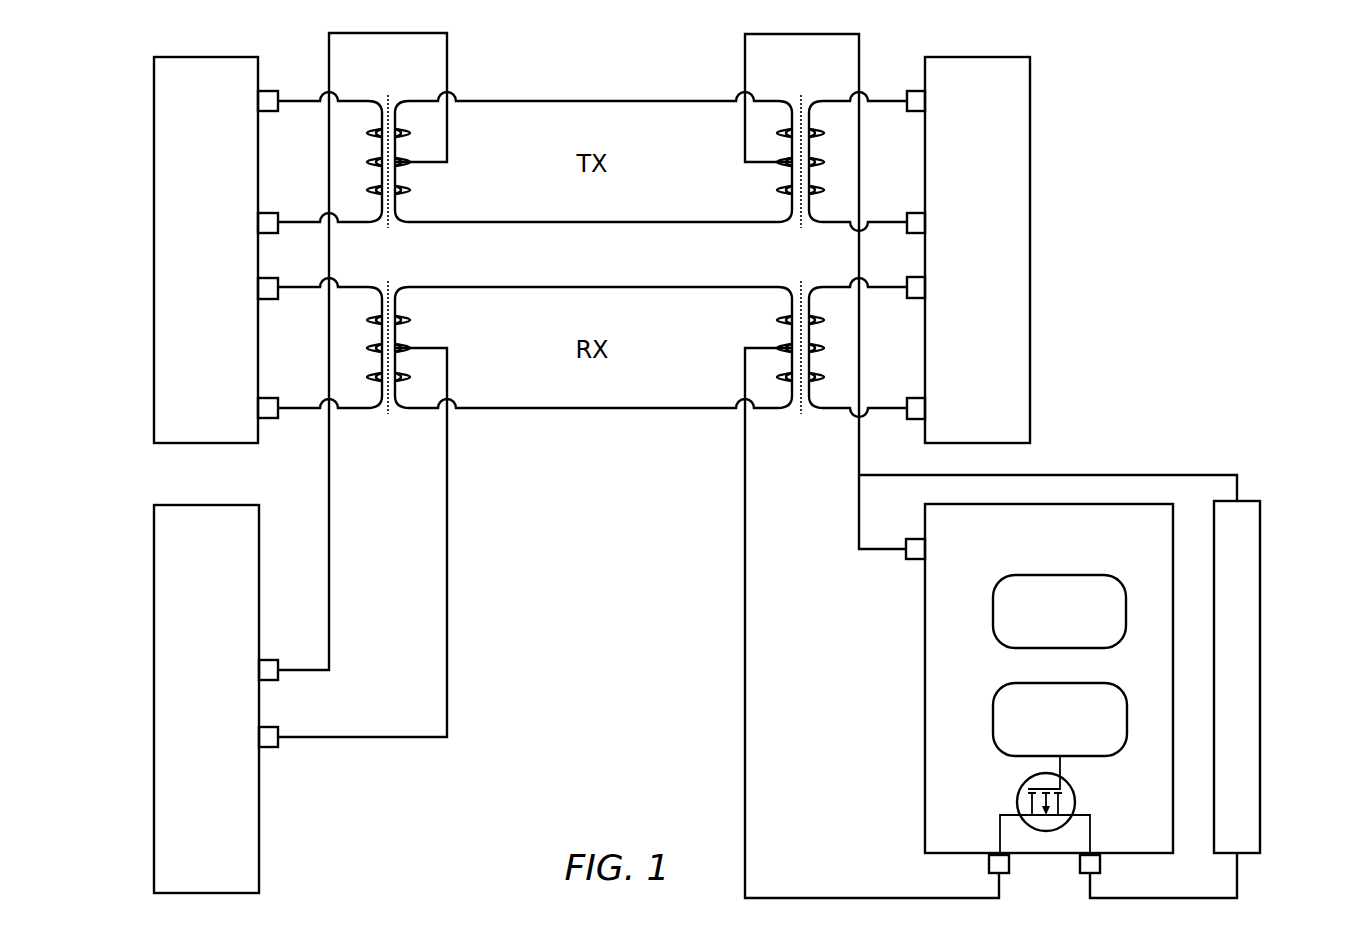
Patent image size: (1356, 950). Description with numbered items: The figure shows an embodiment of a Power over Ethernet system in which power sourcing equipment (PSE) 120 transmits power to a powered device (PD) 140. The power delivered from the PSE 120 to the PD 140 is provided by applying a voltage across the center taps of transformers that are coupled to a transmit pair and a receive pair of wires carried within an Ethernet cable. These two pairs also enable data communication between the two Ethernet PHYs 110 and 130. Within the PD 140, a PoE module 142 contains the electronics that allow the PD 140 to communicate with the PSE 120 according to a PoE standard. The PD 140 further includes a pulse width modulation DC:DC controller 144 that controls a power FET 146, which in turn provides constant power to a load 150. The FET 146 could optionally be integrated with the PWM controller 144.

The Ethernet PHY 110 is at (154, 250).
The power sourcing equipment (PSE) 120 is at (154, 700).
The Ethernet PHY 130 is at (1030, 250).
The powered device (PD) 140 is at (925, 668).
The PoE module 142 is at (1028, 575).
The pulse width modulation (PWM) DC:DC controller 144 is at (1005, 683).
The power FET 146 is at (1017, 803).
The load 150 is at (1260, 668).